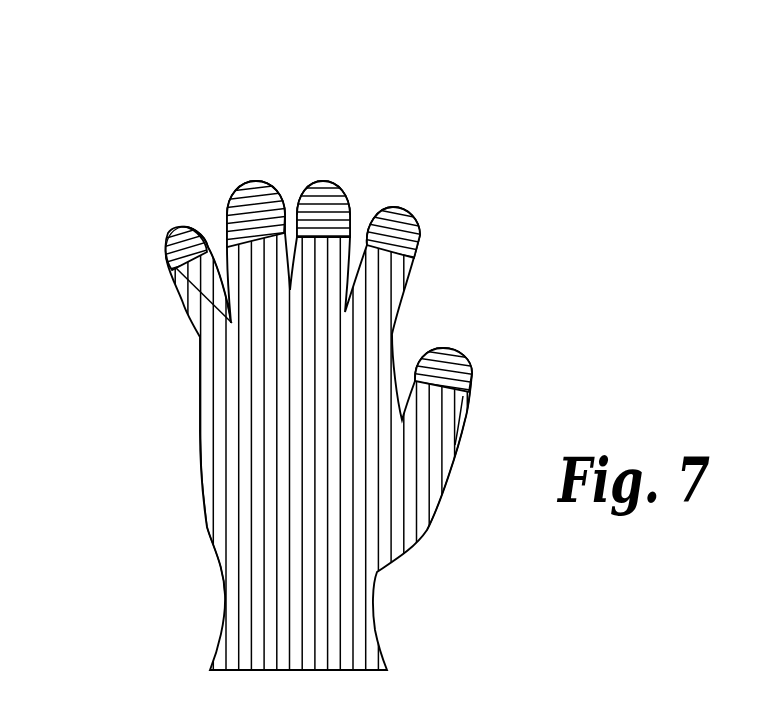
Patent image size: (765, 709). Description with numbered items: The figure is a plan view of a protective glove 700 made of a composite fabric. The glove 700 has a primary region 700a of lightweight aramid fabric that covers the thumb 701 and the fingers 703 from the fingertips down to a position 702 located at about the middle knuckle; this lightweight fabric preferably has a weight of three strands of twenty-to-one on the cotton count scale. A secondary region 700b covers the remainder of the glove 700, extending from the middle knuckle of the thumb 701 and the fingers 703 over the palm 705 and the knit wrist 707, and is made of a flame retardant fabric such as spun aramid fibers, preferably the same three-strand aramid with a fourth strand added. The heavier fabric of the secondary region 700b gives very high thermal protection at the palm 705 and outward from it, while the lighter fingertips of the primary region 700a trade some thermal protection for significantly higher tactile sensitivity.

The glove 700 is at (455, 515).
The primary region 700a is at (255, 217).
The secondary region 700b is at (320, 483).
The thumb 701 is at (472, 378).
The position 702 is at (178, 290).
The fingers 703 is at (178, 237).
The palm 705 is at (205, 525).
The knit wrist 707 is at (217, 638).